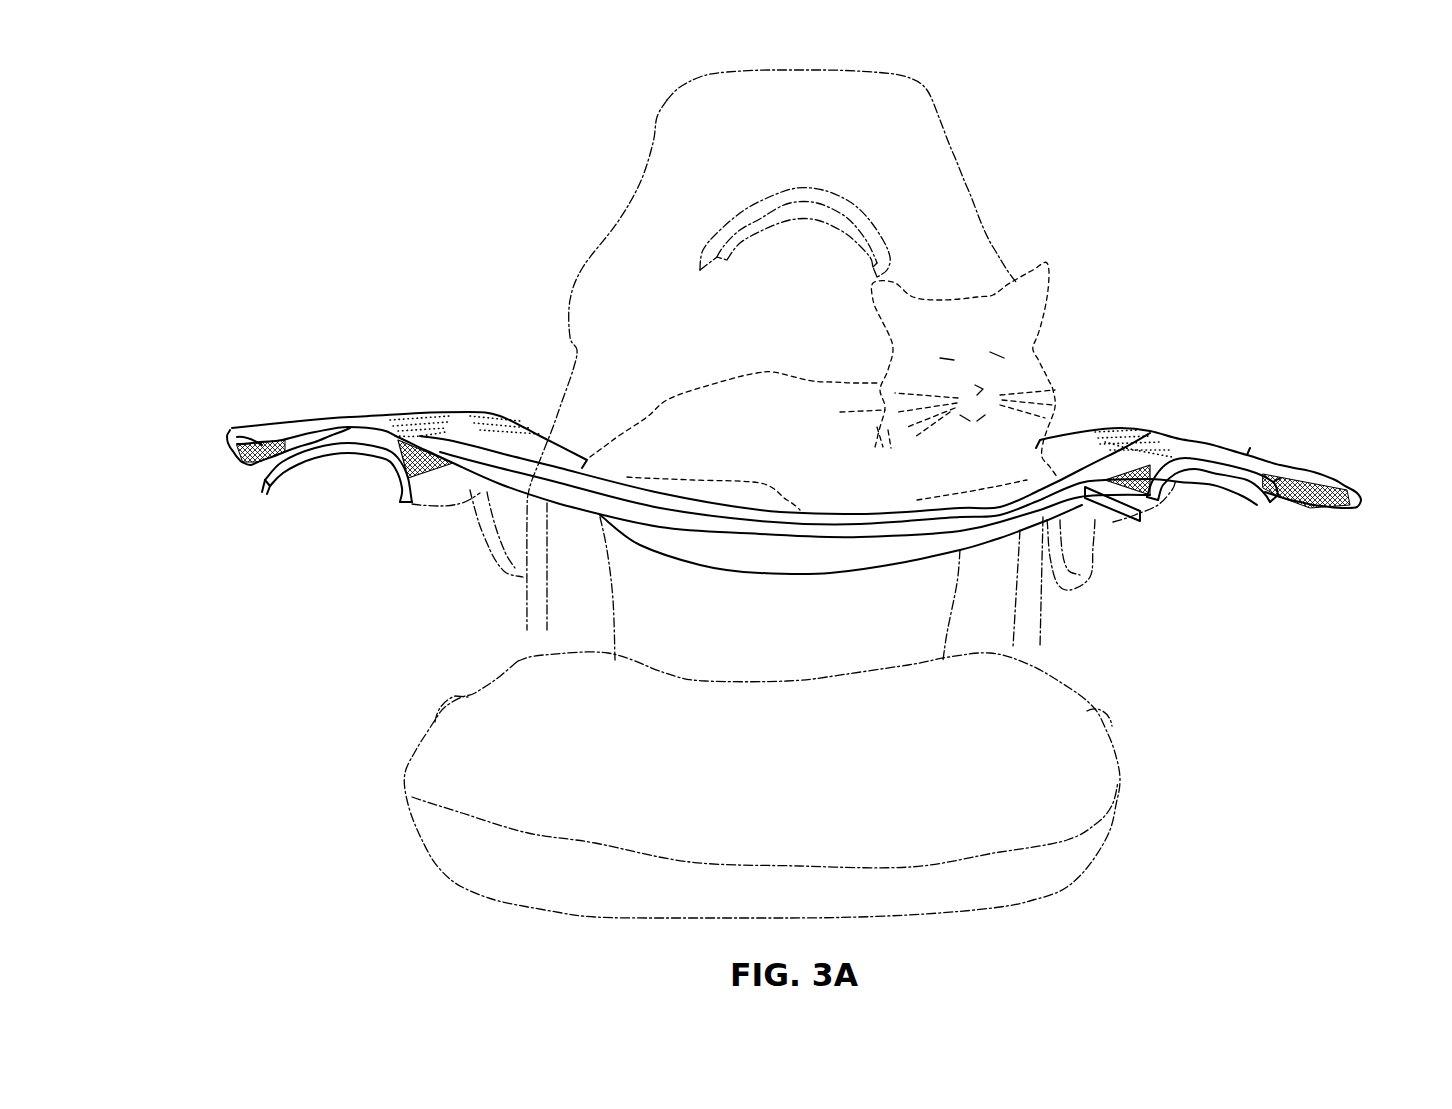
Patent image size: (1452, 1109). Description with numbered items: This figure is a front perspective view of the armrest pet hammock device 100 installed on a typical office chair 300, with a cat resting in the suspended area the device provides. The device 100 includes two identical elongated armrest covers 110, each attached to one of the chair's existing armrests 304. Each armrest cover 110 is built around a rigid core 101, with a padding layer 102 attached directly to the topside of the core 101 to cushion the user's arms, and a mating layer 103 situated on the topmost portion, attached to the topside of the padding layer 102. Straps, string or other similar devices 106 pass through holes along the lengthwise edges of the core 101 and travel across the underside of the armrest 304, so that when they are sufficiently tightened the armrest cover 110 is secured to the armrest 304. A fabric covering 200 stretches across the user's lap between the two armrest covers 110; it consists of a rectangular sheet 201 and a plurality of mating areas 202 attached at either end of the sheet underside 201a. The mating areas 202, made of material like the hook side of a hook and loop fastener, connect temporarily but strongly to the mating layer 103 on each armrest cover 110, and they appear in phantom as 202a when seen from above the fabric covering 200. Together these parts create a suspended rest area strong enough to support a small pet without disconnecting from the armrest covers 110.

The armrest pet hammock device 100 is at (785, 401).
The core 101 is at (305, 478).
The padding layer 102 is at (265, 483).
The mating layer 103 is at (395, 445).
The straps, string or other similar devices 106 is at (474, 492).
The armrest cover 110 is at (760, 505).
The fabric covering 200 is at (797, 608).
The rectangular sheet 201 is at (532, 443).
The sheet underside 201a is at (748, 552).
The mating area 202 is at (228, 451).
The mating areas in phantom 202a is at (437, 432).
The chair 300 is at (983, 121).
The armrest 304 is at (441, 505).